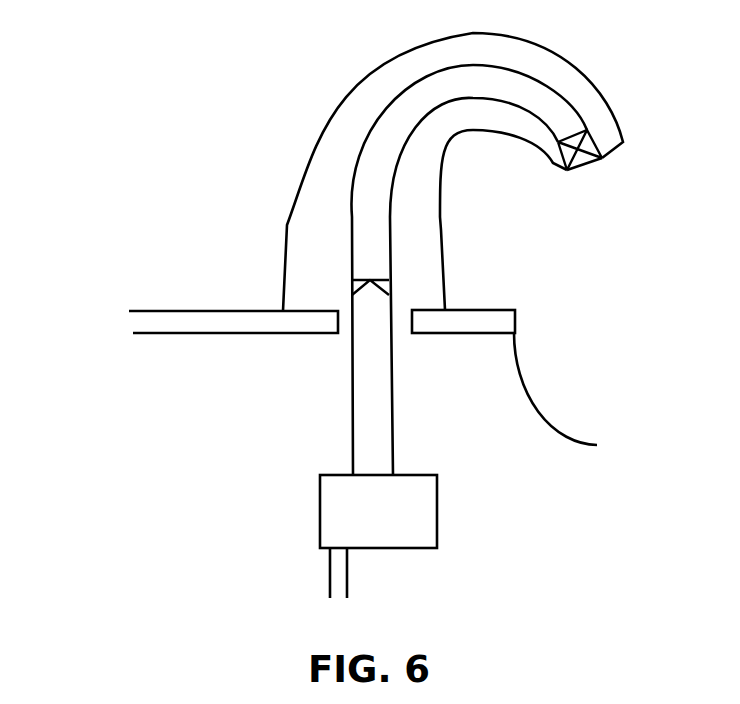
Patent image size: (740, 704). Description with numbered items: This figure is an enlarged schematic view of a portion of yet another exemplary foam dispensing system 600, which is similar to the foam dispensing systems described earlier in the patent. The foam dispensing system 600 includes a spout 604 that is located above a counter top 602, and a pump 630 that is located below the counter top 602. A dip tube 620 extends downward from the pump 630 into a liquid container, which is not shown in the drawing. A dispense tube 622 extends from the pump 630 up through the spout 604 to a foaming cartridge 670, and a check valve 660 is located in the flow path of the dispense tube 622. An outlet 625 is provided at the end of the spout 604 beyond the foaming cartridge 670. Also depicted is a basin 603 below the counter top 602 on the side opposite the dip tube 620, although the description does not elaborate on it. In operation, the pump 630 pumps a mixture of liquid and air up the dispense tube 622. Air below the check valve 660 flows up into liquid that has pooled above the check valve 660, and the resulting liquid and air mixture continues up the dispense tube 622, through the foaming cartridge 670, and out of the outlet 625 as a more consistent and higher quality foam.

The foam dispensing system 600 is at (96, 240).
The counter top 602 is at (250, 308).
The sink basin 603 is at (528, 395).
The spout 604 is at (373, 70).
The dip tube 620 is at (348, 583).
The dispense tube 622 is at (392, 103).
The outlet 625 is at (588, 161).
The pump 630 is at (437, 515).
The check valve 660 is at (367, 280).
The foaming cartridge 670 is at (590, 146).